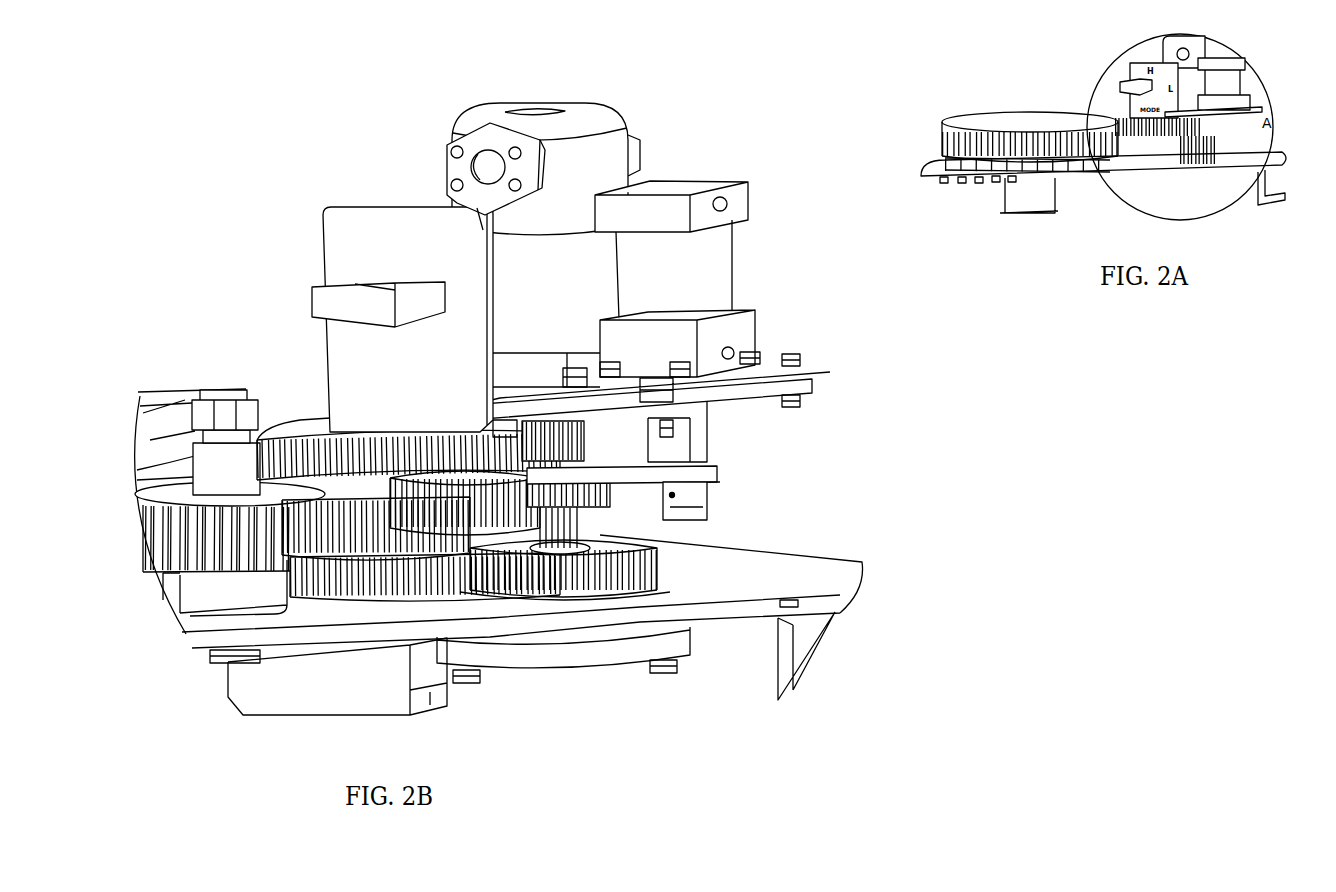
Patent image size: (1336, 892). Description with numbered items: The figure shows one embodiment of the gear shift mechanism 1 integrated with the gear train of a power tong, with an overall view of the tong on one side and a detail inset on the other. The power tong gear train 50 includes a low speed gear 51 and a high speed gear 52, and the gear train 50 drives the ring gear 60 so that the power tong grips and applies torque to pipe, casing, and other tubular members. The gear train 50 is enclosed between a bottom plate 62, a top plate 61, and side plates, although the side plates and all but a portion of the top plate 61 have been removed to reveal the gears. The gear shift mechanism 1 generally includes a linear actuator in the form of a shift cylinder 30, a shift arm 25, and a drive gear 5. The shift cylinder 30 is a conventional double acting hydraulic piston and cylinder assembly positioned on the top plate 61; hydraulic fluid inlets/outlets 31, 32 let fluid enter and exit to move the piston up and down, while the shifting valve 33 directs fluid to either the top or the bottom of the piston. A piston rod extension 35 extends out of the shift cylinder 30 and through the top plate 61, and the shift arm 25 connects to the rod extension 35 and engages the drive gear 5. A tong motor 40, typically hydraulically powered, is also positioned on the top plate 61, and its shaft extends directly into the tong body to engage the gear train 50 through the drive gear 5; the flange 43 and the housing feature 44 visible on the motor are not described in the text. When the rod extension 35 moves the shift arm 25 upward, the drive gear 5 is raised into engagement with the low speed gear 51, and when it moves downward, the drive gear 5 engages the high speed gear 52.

In FIG. 2B, the gear shift mechanism 1 is at (568, 410).
In FIG. 2B, the drive gear 5 is at (588, 434).
In FIG. 2B, the shift arm 25 is at (670, 478).
In FIG. 2B, the shift cylinder 30 is at (733, 268).
In FIG. 2B, the hydraulic fluid inlet/outlet 31 is at (720, 203).
In FIG. 2B, the hydraulic fluid inlet/outlet 32 is at (729, 352).
In FIG. 2B, the shifting valve 33 is at (345, 300).
In FIG. 2B, the piston rod extension 35 is at (707, 437).
In FIG. 2B, the tong motor 40 is at (602, 108).
In FIG. 2B, the motor flange 43 is at (488, 166).
In FIG. 2B, the housing side rib 44 is at (634, 152).
In FIG. 2B, the power tong gear train 50 is at (276, 398).
In FIG. 2B, the low speed gear 51 is at (312, 425).
In FIG. 2B, the high speed gear 52 is at (600, 545).
In FIG. 2A, the ring gear 60 is at (990, 110).
In FIG. 2B, the top plate 61 is at (812, 382).
In FIG. 2B, the bottom plate 62 is at (820, 573).
In FIG. 2A, the bottom plate 62 is at (1255, 158).